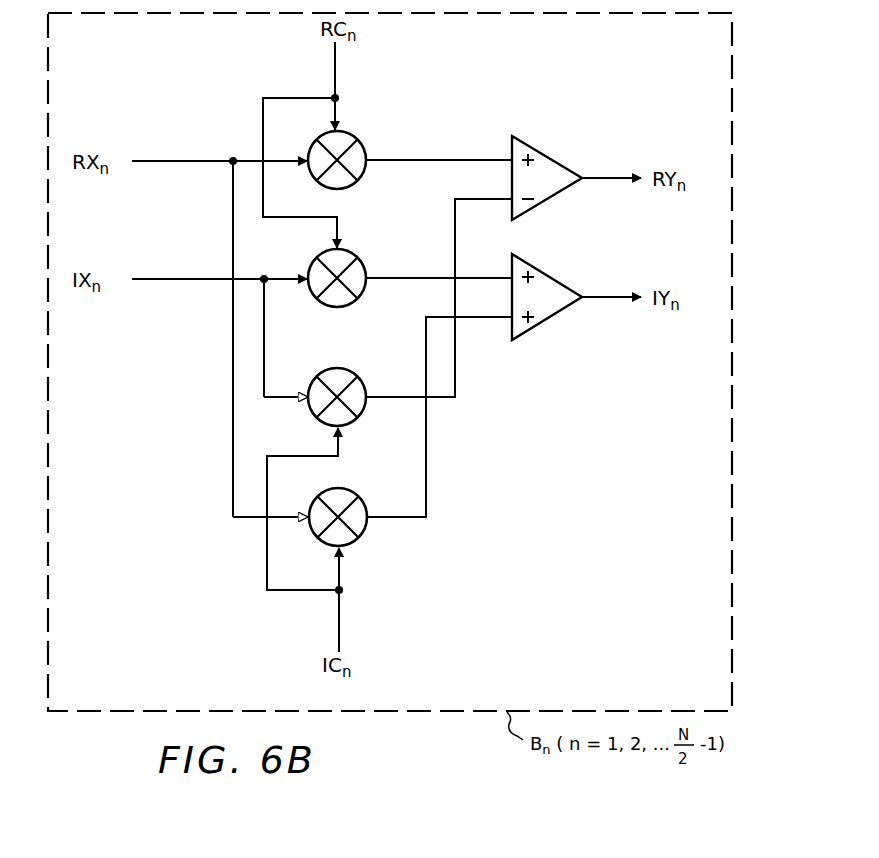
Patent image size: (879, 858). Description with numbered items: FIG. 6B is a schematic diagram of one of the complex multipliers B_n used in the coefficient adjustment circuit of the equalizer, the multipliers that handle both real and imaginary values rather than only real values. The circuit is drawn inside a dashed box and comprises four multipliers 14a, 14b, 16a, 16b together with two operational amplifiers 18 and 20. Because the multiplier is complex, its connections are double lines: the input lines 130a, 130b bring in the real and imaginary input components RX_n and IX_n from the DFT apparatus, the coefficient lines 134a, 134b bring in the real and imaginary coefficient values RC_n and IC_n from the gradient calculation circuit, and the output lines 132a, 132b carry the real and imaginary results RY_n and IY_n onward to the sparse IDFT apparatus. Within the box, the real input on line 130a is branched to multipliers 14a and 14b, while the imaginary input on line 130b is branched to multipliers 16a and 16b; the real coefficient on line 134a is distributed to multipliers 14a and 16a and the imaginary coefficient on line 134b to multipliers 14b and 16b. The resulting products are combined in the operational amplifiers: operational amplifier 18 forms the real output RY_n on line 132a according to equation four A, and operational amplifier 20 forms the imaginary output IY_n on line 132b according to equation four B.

The multiplier 14a is at (358, 182).
The multiplier 14b is at (360, 540).
The multiplier 16a is at (359, 300).
The multiplier 16b is at (359, 419).
The operational amplifier 18 is at (558, 163).
The operational amplifier 20 is at (558, 282).
The input line 130a is at (143, 163).
The input line 130b is at (146, 281).
The output line 132a is at (592, 181).
The output line 132b is at (600, 300).
The coefficient input line 134a is at (337, 68).
The coefficient input line 134b is at (341, 565).